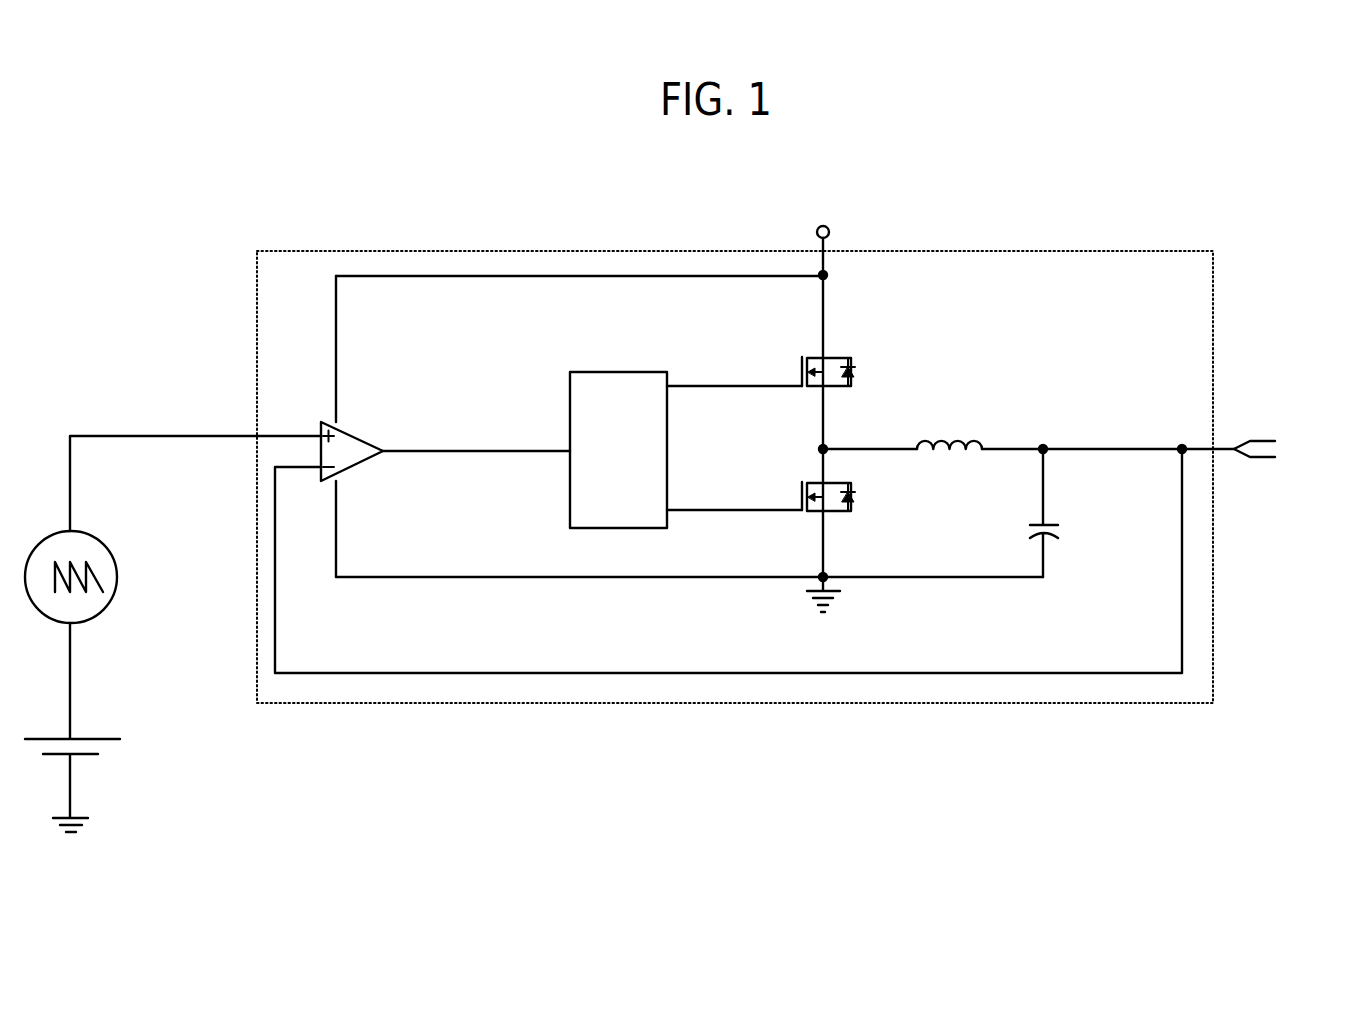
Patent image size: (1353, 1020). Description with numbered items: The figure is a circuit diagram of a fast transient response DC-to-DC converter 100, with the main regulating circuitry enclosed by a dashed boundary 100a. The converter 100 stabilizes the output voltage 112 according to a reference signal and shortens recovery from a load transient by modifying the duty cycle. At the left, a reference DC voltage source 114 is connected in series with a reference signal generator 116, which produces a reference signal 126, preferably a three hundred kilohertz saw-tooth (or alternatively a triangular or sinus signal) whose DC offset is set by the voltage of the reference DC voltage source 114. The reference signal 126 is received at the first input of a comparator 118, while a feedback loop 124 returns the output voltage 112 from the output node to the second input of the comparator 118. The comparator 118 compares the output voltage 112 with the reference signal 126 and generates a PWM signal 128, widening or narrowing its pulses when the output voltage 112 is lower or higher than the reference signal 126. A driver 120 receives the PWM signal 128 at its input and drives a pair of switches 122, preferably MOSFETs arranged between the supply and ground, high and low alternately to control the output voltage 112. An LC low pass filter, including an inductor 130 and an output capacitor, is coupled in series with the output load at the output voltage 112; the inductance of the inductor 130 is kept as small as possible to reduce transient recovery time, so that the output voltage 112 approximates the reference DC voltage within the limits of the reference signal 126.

The fast transient response DC-DC converter 100 is at (237, 221).
The integrated circuit boundary 100a is at (503, 250).
The output voltage Vout 112 is at (1250, 441).
The reference DC voltage source Vref 114 is at (86, 735).
The reference signal generator 116 is at (117, 572).
The comparator 118 is at (355, 433).
The driver 120 is at (610, 372).
The pair of switches 122 is at (855, 362).
The feedback loop 124 is at (495, 660).
The reference signal 126 is at (190, 423).
The PWM signal 128 is at (498, 456).
The inductor 130 is at (968, 440).